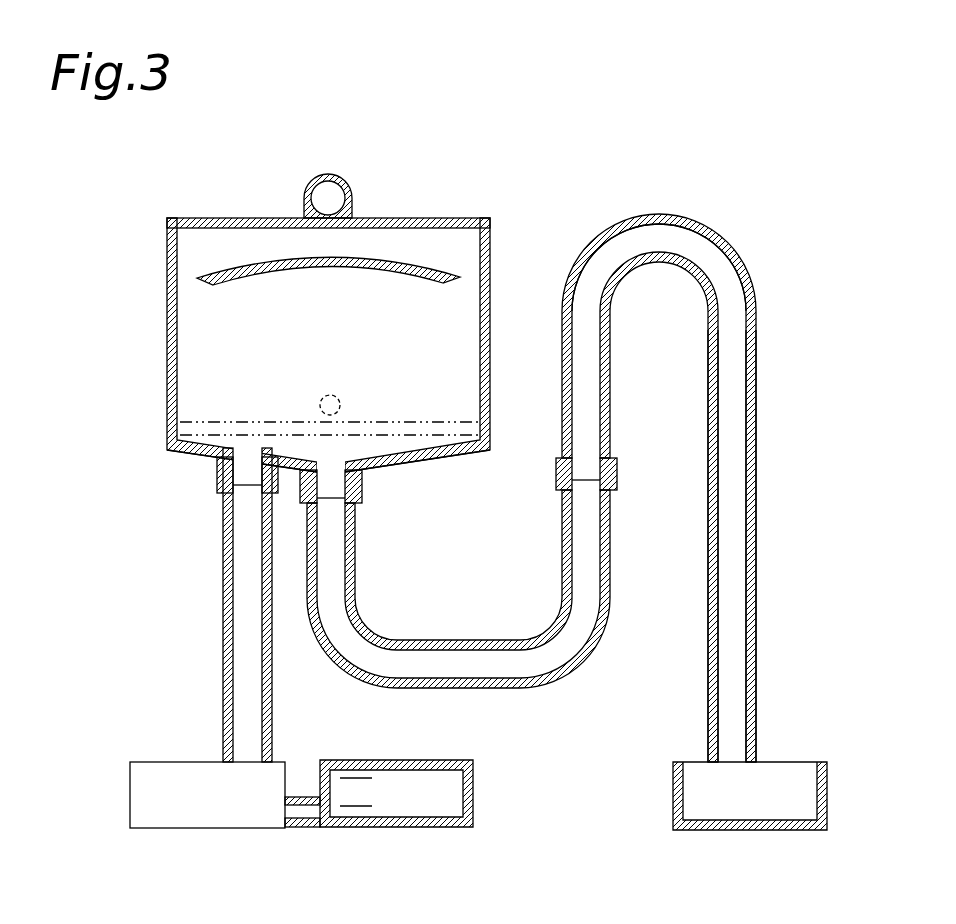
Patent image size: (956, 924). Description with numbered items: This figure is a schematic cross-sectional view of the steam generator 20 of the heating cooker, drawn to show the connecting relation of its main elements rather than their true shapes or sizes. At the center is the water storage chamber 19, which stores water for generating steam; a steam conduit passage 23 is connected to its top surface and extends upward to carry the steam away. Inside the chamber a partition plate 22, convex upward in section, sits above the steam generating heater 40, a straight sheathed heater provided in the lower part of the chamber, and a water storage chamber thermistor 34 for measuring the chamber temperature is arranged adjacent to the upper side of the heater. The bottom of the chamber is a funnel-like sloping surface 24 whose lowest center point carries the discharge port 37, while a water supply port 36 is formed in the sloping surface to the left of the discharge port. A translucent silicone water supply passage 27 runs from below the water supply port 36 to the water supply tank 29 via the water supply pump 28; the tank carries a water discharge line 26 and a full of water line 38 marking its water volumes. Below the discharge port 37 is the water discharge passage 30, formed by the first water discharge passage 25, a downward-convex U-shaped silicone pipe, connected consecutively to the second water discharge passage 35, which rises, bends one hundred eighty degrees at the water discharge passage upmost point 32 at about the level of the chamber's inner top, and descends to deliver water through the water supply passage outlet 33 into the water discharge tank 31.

The water storage chamber 19 is at (205, 240).
The steam generator 20 is at (279, 321).
The partition plate 22 is at (413, 263).
The steam conduit passage 23 is at (327, 197).
The sloping surface 24 is at (205, 455).
The first water discharge passage 25 is at (485, 663).
The water discharge line 26 is at (358, 808).
The water supply passage 27 is at (248, 710).
The water supply pump 28 is at (207, 808).
The water supply tank 29 is at (422, 807).
The water discharge passage 30 is at (565, 451).
The water discharge tank 31 is at (755, 805).
The water discharge passage upmost point 32 is at (655, 215).
The water supply passage outlet 33 is at (733, 758).
The water storage chamber thermistor 34 is at (336, 412).
The second water discharge passage 35 is at (642, 238).
The water supply port 36 is at (220, 470).
The discharge port 37 is at (330, 473).
The full of water line 38 is at (357, 778).
The steam generating heater 40 is at (203, 428).